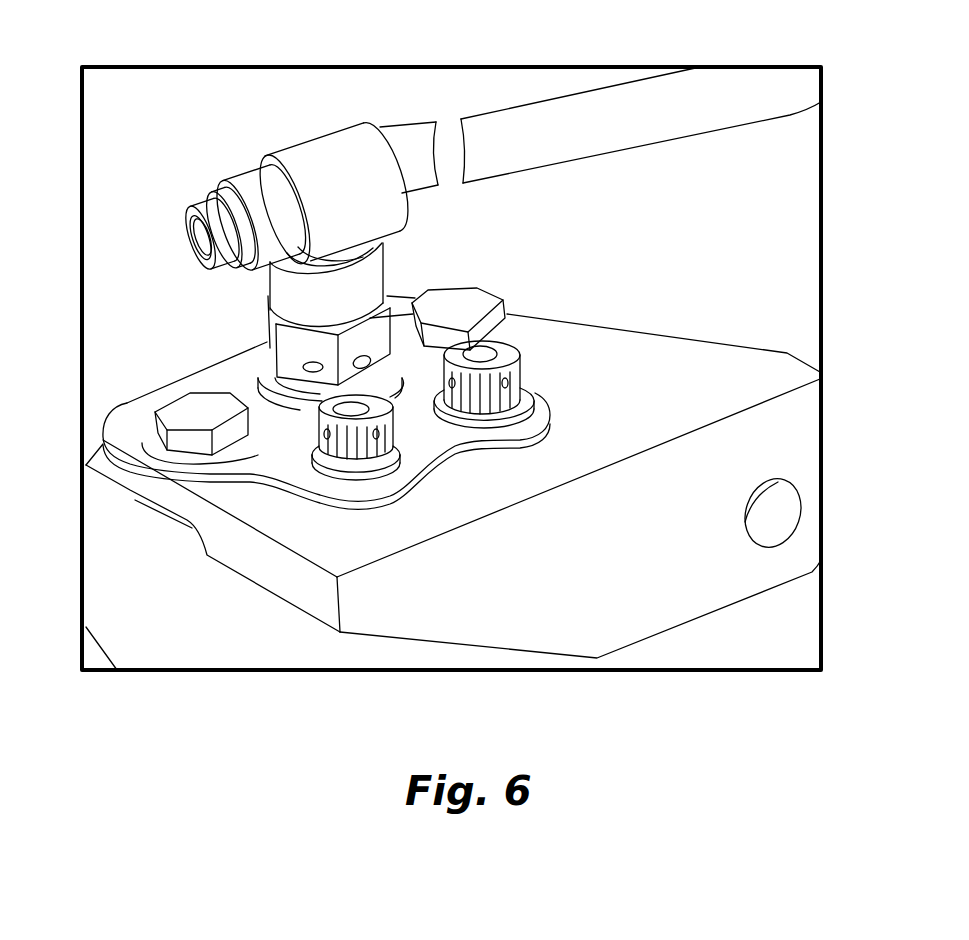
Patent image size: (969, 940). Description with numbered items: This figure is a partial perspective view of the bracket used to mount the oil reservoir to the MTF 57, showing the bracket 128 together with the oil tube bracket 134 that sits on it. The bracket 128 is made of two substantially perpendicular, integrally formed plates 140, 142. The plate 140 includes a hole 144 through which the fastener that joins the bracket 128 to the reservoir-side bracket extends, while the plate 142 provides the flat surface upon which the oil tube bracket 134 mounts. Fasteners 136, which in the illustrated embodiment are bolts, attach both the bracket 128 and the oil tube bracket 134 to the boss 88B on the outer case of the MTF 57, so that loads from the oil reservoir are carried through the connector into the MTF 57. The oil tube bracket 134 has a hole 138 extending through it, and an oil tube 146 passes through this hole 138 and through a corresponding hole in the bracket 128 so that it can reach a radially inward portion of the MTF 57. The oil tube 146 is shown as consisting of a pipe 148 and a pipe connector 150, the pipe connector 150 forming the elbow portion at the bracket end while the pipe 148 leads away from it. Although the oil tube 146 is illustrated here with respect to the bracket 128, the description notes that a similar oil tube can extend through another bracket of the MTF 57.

The MTF 57 is at (98, 607).
The boss 88B is at (107, 518).
The bracket 128 is at (710, 333).
The oil tube bracket 134 is at (253, 490).
The fasteners 136 is at (180, 408).
The hole 138 is at (268, 372).
The plate 140 is at (578, 623).
The plate 142 is at (598, 357).
The hole 144 is at (779, 528).
The oil tube 146 is at (278, 146).
The pipe 148 is at (560, 112).
The pipe connector 150 is at (283, 283).